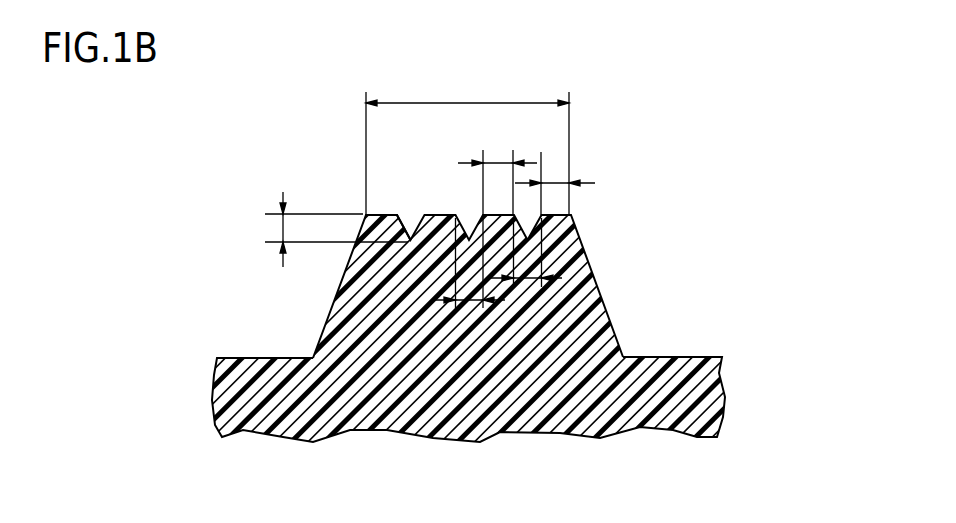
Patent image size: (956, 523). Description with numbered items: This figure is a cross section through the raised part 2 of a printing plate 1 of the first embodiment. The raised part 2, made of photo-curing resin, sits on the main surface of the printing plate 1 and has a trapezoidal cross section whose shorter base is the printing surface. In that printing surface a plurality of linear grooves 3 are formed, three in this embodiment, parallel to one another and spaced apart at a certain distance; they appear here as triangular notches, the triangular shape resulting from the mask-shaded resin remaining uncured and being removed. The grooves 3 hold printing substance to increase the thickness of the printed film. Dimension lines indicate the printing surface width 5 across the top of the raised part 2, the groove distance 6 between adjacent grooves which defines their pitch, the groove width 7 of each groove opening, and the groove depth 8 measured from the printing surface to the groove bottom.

The printing plate 1 is at (716, 400).
The raised part 2 is at (593, 330).
The groove 3 is at (412, 213).
The printing surface width 5 is at (473, 102).
The groove distance 6 is at (500, 162).
The groove width 7 is at (471, 303).
The groove depth 8 is at (283, 230).